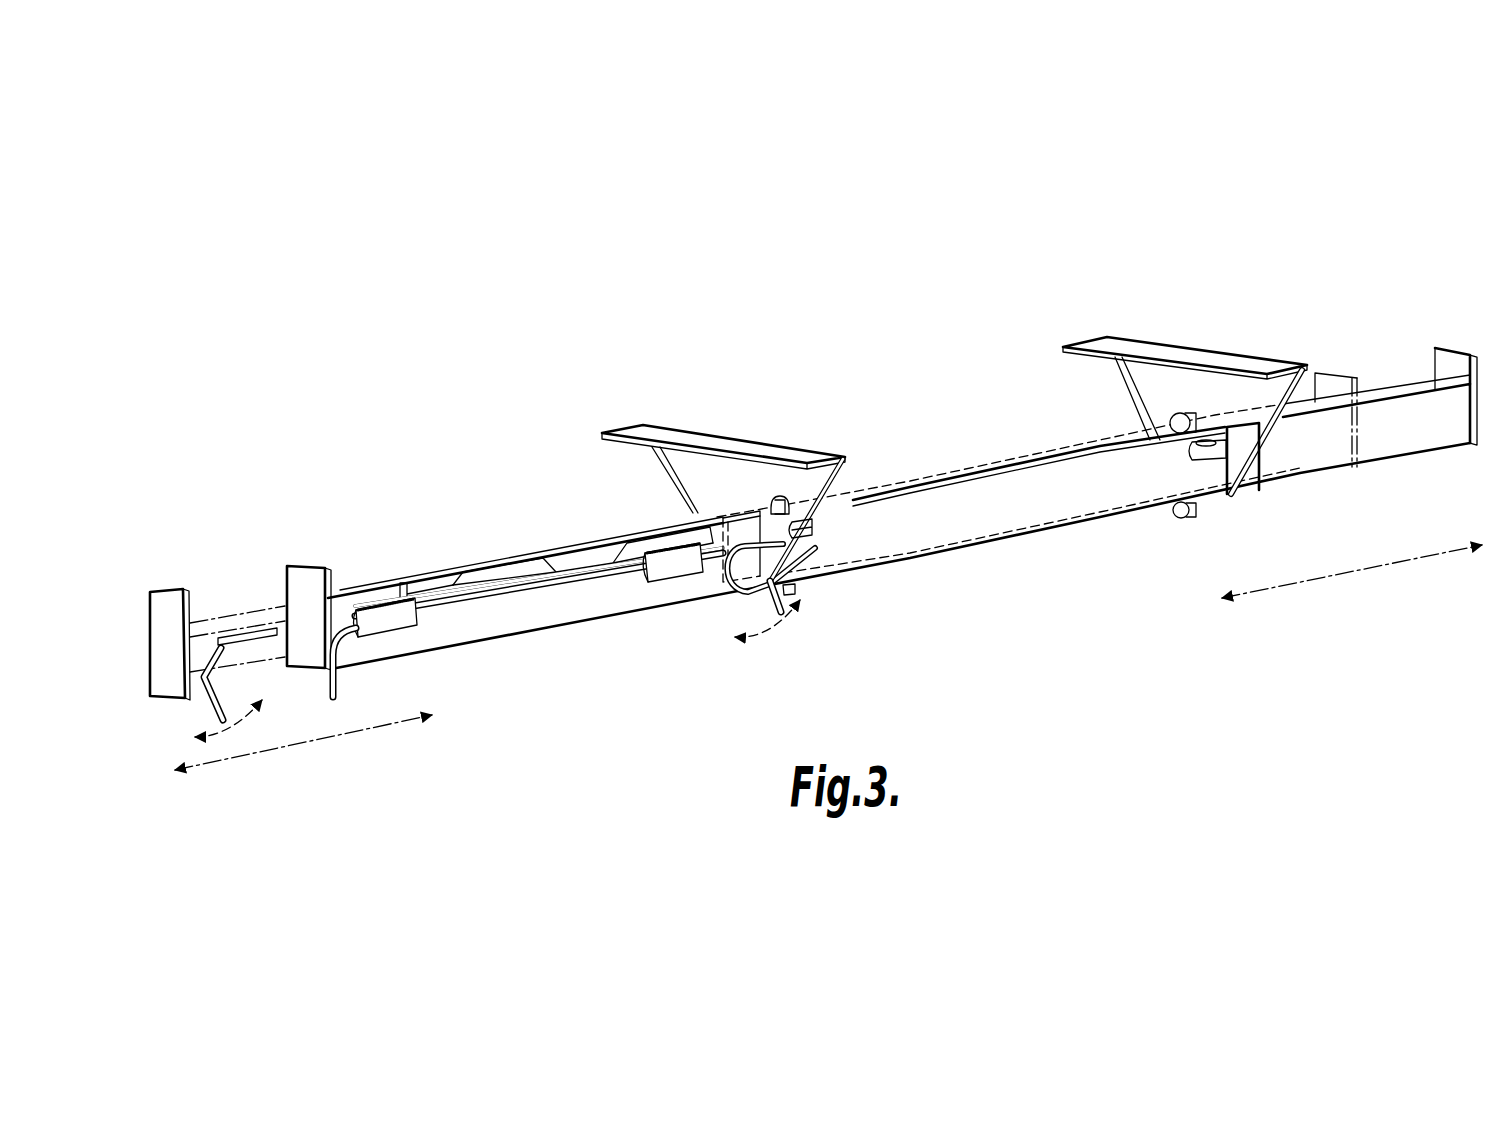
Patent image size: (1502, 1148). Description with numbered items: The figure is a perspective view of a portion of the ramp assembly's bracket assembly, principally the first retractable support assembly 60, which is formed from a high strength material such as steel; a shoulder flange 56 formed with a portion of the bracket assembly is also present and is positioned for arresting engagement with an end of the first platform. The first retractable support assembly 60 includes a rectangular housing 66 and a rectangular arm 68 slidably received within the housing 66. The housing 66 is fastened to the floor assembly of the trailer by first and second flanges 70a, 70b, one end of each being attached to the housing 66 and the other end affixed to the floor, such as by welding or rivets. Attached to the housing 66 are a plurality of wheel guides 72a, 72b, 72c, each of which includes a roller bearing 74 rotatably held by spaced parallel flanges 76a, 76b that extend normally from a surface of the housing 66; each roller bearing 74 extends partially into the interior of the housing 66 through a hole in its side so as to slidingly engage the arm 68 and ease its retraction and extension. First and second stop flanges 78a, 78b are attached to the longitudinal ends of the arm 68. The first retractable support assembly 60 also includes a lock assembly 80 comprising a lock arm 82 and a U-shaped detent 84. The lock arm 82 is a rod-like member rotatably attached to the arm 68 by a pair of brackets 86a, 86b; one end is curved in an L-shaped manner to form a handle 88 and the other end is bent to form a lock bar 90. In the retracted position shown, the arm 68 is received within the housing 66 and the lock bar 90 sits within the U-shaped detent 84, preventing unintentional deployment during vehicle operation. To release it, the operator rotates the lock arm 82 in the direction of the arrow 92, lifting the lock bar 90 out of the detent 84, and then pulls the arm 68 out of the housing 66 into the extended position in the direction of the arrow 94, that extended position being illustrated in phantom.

The shoulder flange 56 is at (511, 570).
The first retractable support assembly 60 is at (926, 476).
The housing 66 is at (990, 534).
The arm 68 is at (490, 632).
The first flange 70a is at (721, 435).
The second flange 70b is at (1165, 348).
The wheel guide 72a is at (778, 495).
The wheel guide 72b is at (819, 533).
The wheel guide 72c is at (1181, 518).
The roller bearing 74 is at (1168, 420).
The flange 76a is at (1170, 428).
The flange 76b is at (1192, 418).
The first stop flange 78a is at (171, 596).
The second stop flange 78b is at (1341, 376).
The lock assembly 80 is at (540, 602).
The lock arm 82 is at (603, 581).
The U-shaped detent 84 is at (822, 568).
The bracket 86a is at (390, 632).
The bracket 86b is at (668, 578).
The handle 88 is at (343, 692).
The lock bar 90 is at (754, 633).
The arrow 92 is at (763, 637).
The arrow 94 is at (284, 744).